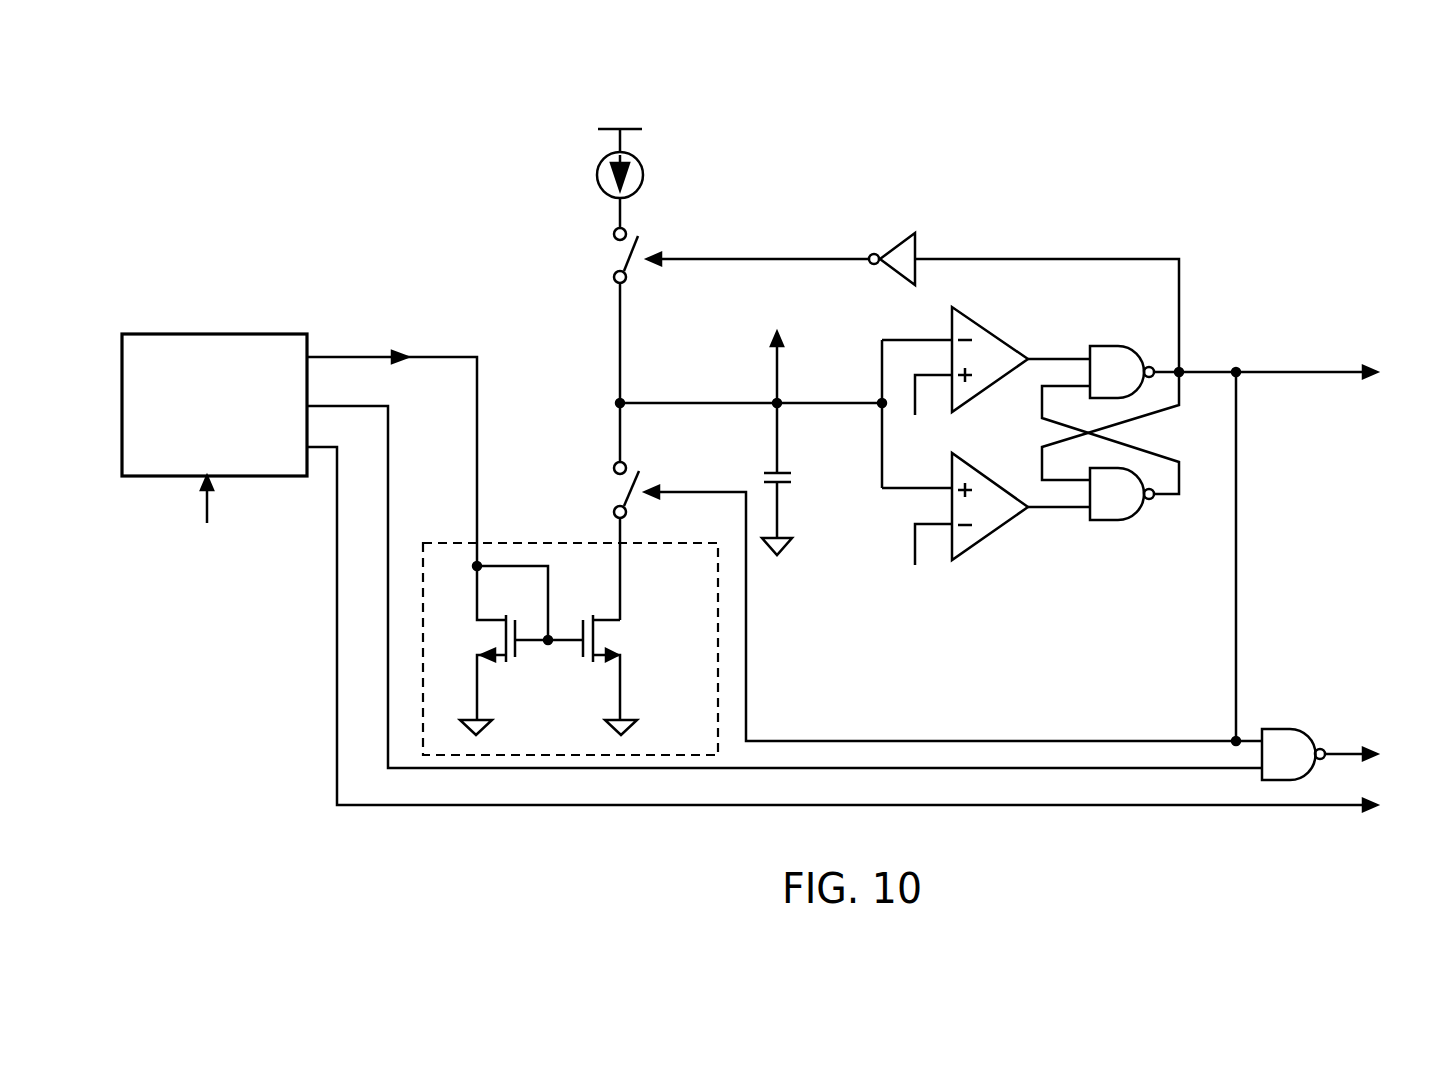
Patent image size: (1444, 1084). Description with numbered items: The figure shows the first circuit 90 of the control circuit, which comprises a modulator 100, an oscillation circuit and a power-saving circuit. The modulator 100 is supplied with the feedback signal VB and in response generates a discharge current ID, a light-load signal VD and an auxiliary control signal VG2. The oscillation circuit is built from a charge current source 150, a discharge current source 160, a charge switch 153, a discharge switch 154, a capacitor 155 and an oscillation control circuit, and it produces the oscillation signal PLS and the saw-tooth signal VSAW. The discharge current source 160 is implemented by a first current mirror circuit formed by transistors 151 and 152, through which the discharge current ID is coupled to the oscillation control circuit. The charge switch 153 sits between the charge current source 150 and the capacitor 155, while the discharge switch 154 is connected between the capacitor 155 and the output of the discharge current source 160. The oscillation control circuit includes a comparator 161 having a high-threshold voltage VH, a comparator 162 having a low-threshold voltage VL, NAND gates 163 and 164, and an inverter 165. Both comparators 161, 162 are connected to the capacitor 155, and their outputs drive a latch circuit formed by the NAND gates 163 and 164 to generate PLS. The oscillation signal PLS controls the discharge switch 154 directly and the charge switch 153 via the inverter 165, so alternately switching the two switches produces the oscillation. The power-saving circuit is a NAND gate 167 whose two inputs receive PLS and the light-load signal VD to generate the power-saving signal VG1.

The first circuit 90 is at (1390, 151).
The modulator 100 is at (250, 332).
The charge current source 150 is at (595, 178).
The transistor 151 is at (510, 665).
The transistor 152 is at (622, 637).
The charge switch 153 is at (608, 258).
The discharge switch 154 is at (608, 492).
The capacitor 155 is at (797, 478).
The discharge current source 160 is at (565, 615).
The comparator 161 is at (998, 332).
The comparator 162 is at (991, 540).
The NAND gate 163 is at (1112, 343).
The NAND gate 164 is at (1110, 523).
The inverter 165 is at (898, 236).
The NAND gate 167 is at (1285, 727).